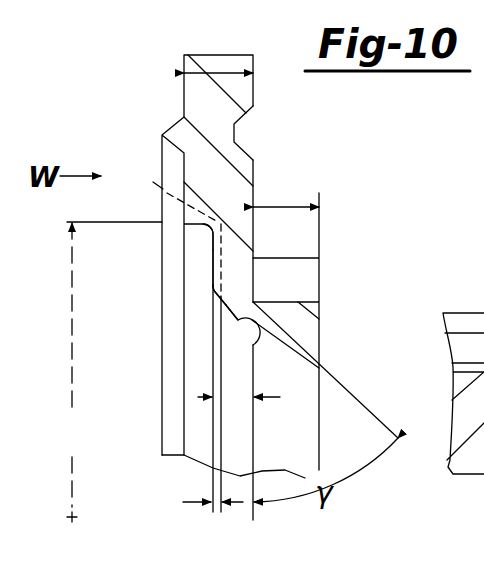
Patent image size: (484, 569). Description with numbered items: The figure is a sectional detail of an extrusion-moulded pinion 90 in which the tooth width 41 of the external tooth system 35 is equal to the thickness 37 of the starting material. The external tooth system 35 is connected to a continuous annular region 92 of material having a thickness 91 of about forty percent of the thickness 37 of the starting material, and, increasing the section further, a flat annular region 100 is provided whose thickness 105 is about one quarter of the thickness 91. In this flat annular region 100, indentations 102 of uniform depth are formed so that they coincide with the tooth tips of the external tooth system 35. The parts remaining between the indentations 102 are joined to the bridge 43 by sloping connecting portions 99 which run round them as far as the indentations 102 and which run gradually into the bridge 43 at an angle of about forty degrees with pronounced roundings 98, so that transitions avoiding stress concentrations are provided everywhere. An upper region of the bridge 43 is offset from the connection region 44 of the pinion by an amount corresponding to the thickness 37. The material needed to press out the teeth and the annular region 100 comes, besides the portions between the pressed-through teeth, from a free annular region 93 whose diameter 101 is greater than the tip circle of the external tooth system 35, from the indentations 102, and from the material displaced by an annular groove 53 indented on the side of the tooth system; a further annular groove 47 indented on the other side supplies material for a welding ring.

The external tooth system 35 is at (285, 278).
The thickness of the starting material 37 is at (223, 72).
The tooth width 41 is at (285, 206).
The bridge 43 is at (280, 452).
The connection region 44 is at (217, 118).
The annular groove 47 is at (248, 132).
The annular groove 53 is at (297, 378).
The pinion 90 is at (328, 308).
The thickness 91 is at (237, 399).
The continuous annular region 92 is at (213, 280).
The free annular region 93 is at (203, 236).
The roundings 98 is at (236, 327).
The sloping connecting portions 99 is at (226, 304).
The flat annular region 100 is at (165, 231).
The diameter 101 is at (105, 372).
The indentations 102 is at (213, 249).
The thickness 105 is at (207, 491).